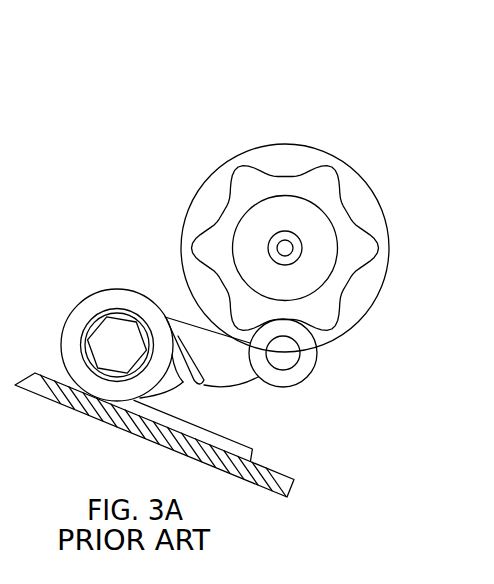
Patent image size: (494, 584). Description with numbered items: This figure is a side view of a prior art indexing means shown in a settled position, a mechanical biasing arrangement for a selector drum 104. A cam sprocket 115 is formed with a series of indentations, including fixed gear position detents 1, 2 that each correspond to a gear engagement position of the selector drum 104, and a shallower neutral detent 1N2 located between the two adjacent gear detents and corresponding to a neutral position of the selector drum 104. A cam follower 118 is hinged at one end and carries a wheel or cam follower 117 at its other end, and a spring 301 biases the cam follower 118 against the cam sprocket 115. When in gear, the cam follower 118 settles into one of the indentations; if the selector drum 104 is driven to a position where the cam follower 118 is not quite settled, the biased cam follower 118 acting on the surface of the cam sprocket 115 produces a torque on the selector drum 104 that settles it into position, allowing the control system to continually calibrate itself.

The fixed gear position detent 1 is at (284, 248).
The neutral detent 1N2 is at (287, 246).
The fixed gear position detent 2 is at (290, 246).
The selector drum 104 is at (218, 172).
The cam sprocket 115 is at (228, 189).
The wheel or cam follower 117 is at (315, 372).
The cam follower 118 is at (326, 424).
The spring 301 is at (203, 387).